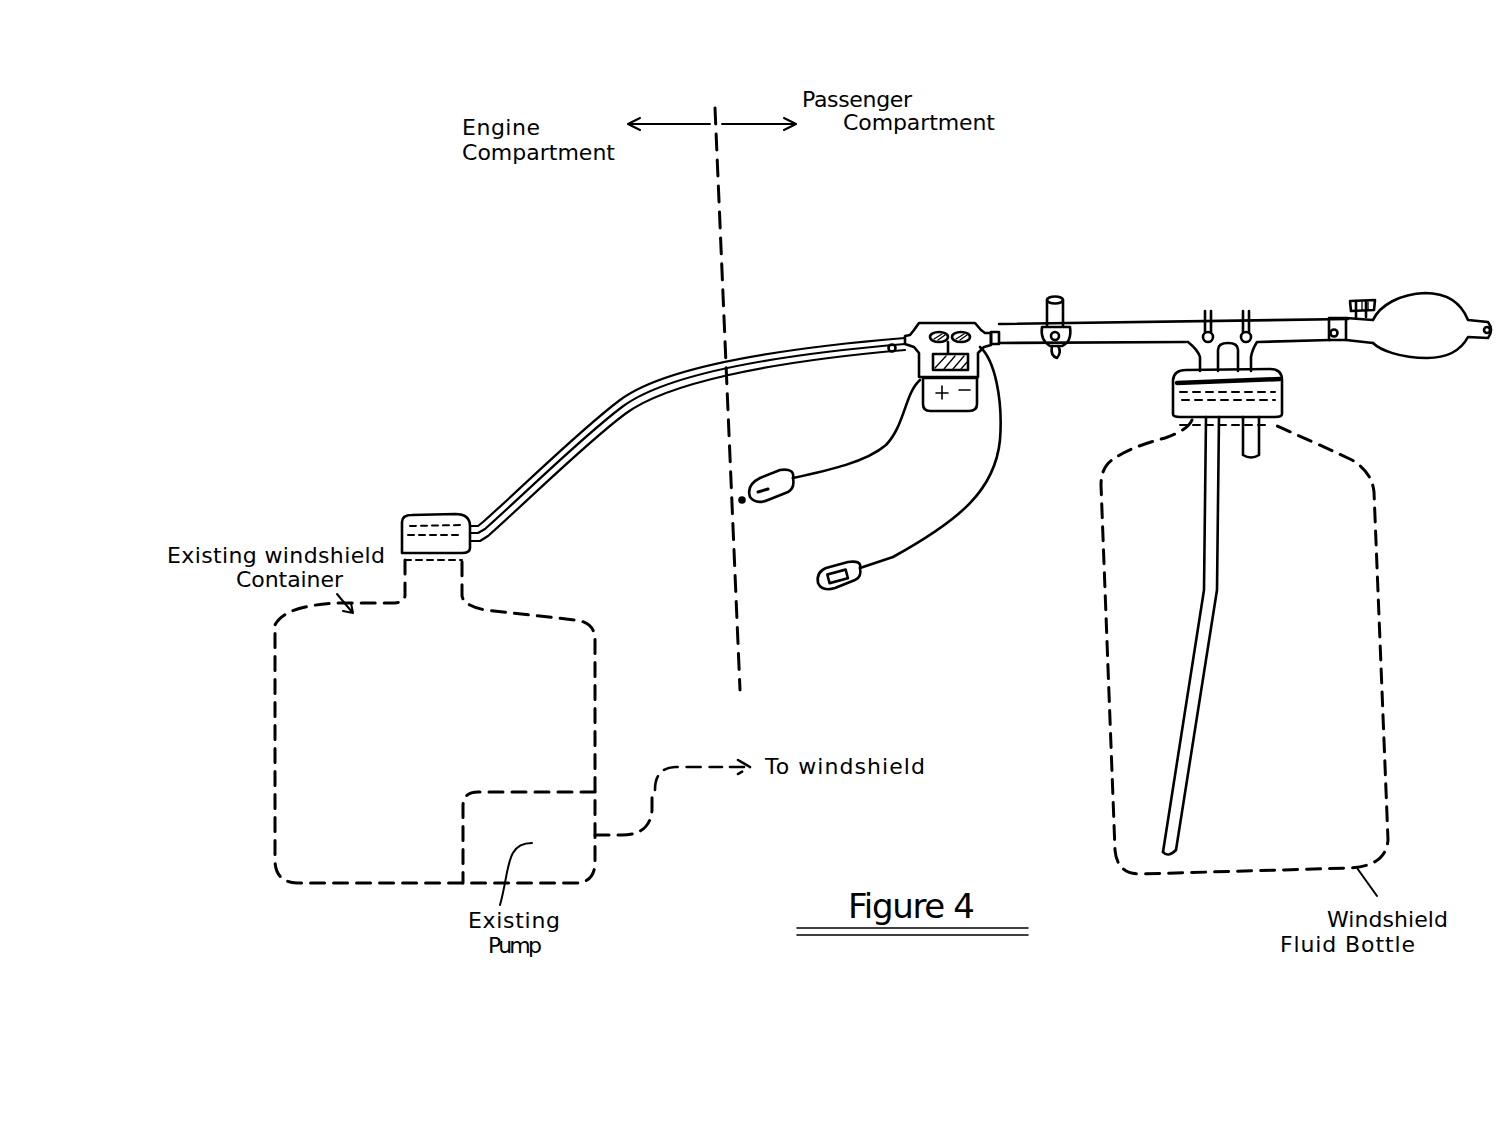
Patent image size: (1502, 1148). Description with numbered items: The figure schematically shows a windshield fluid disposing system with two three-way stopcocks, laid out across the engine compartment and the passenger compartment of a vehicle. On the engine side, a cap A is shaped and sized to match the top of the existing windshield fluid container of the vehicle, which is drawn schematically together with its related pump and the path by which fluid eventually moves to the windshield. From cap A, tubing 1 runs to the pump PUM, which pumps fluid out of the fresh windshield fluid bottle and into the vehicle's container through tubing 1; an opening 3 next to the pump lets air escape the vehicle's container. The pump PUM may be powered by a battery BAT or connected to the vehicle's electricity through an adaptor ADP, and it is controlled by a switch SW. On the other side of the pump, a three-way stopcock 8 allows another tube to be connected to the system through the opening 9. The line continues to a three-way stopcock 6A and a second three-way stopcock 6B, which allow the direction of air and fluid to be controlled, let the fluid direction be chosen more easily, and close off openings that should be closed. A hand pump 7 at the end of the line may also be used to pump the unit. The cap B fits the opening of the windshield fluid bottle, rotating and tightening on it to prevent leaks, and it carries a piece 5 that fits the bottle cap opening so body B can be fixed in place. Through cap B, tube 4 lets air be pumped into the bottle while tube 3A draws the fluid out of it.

The tubing 1 is at (638, 394).
The opening 3 is at (892, 350).
The tube 3A is at (1197, 605).
The tube 4 is at (1270, 430).
The piece 5 is at (1283, 386).
The three-way stopcock 6A is at (1205, 330).
The three-way stopcock 6B is at (1249, 330).
The hand pump 7 is at (1433, 293).
The three-way stopcock 8 is at (1068, 325).
The opening 9 is at (1053, 298).
The cap A is at (430, 514).
The cap B is at (1173, 420).
The pump PUM is at (934, 312).
The battery BAT is at (950, 411).
The adaptor ADP is at (773, 503).
The switch SW is at (843, 589).